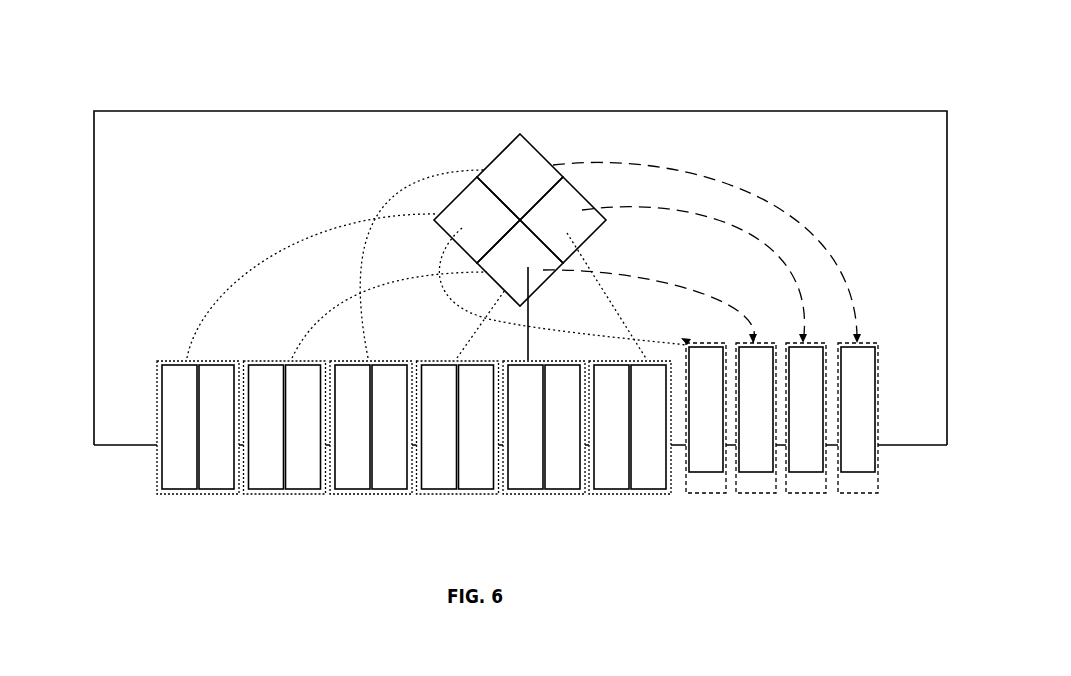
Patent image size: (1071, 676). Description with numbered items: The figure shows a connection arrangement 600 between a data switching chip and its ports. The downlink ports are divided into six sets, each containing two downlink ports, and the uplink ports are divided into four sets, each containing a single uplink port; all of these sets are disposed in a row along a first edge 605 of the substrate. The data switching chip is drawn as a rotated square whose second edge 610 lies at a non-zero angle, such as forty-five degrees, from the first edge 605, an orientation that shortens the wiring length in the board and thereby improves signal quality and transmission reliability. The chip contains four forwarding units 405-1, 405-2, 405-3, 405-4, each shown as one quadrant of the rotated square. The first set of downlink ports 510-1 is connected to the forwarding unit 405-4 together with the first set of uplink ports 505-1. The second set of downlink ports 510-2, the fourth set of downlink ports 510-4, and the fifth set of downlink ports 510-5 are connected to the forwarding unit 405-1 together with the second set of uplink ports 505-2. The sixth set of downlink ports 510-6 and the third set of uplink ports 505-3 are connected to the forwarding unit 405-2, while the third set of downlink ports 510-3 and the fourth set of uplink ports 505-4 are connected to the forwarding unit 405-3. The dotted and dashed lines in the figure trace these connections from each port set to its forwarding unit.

The connection arrangement 600 is at (209, 84).
The first edge 605 is at (130, 443).
The second edge 610 is at (552, 220).
The forwarding unit 405-1 is at (520, 263).
The forwarding unit 405-2 is at (563, 220).
The forwarding unit 405-3 is at (520, 177).
The forwarding unit 405-4 is at (477, 220).
The first set of downlink ports 510-1 is at (170, 494).
The second set of downlink ports 510-2 is at (257, 494).
The third set of downlink ports 510-3 is at (343, 494).
The fourth set of downlink ports 510-4 is at (430, 494).
The fifth set of downlink ports 510-5 is at (517, 494).
The sixth set of downlink ports 510-6 is at (603, 494).
The first set of uplink ports 505-1 is at (695, 494).
The second set of uplink ports 505-2 is at (745, 494).
The third set of uplink ports 505-3 is at (795, 494).
The fourth set of uplink ports 505-4 is at (847, 494).